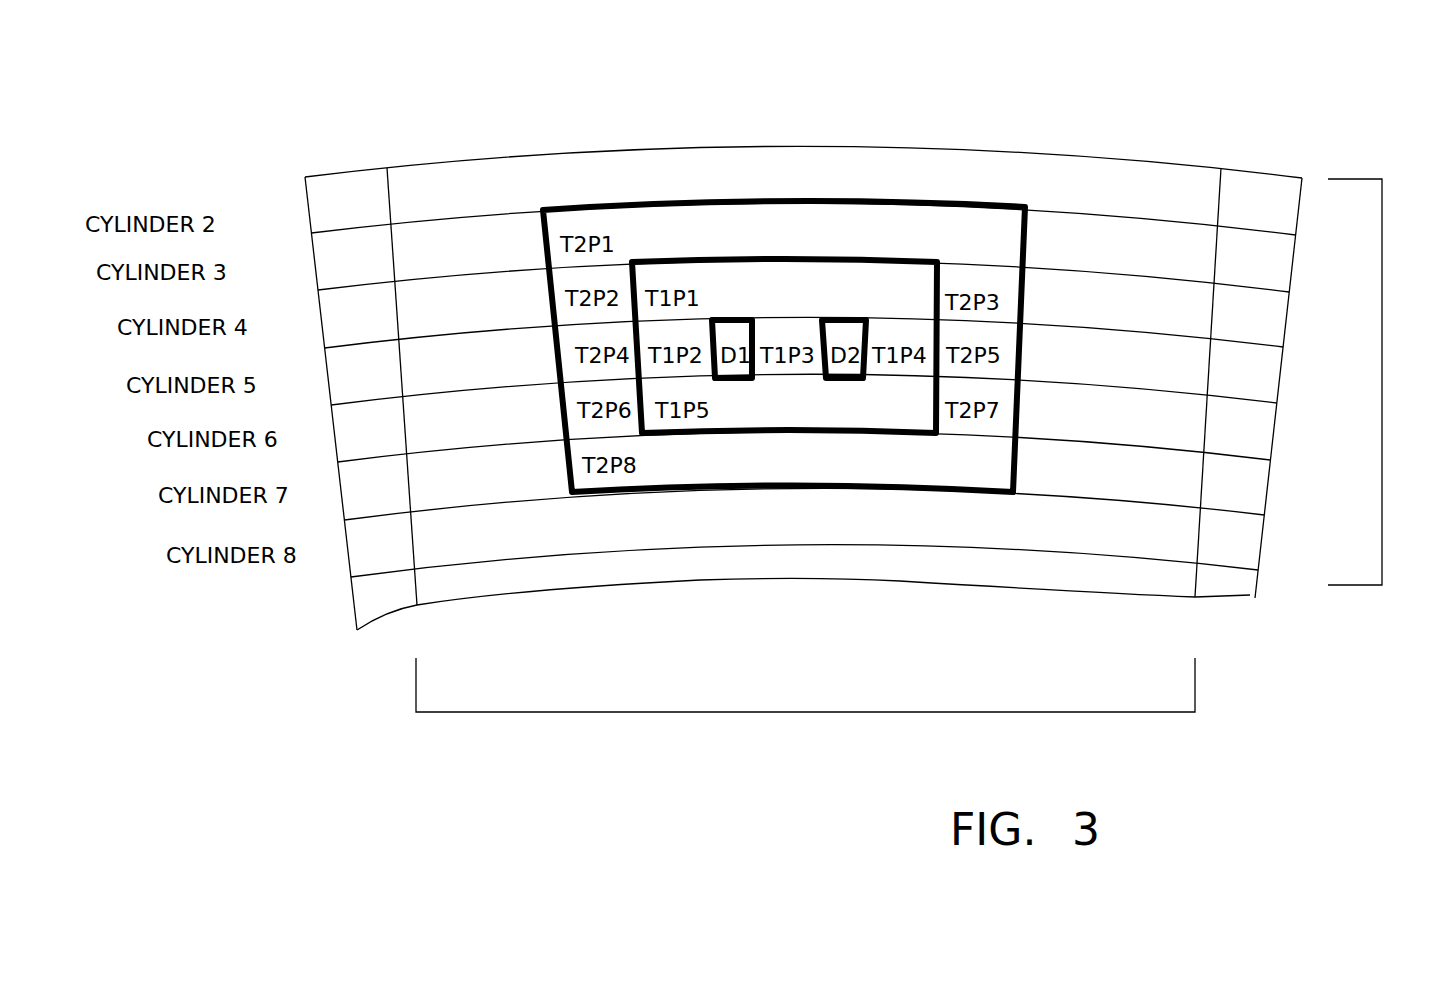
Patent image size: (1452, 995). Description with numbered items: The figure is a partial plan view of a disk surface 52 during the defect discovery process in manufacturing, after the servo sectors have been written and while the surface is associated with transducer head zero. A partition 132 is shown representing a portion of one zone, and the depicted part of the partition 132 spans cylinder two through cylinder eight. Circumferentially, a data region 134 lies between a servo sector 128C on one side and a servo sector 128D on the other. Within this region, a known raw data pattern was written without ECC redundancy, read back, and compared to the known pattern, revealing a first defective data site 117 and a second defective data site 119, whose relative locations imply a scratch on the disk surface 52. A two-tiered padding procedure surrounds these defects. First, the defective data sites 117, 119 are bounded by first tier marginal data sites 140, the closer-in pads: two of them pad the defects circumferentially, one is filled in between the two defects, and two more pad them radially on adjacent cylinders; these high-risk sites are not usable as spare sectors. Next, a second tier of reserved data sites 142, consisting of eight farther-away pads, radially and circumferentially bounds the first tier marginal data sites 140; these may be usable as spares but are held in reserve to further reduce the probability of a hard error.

The disk surface 52 is at (482, 36).
The servo sector 128C is at (341, 112).
The servo sector 128D is at (1281, 115).
The second tier of reserved data sites 142 is at (772, 180).
The first tier marginal data sites 140 is at (893, 250).
The defective data site 117 is at (725, 368).
The defective data site 119 is at (838, 368).
The partition 132 is at (1382, 322).
The data region 134 is at (766, 714).